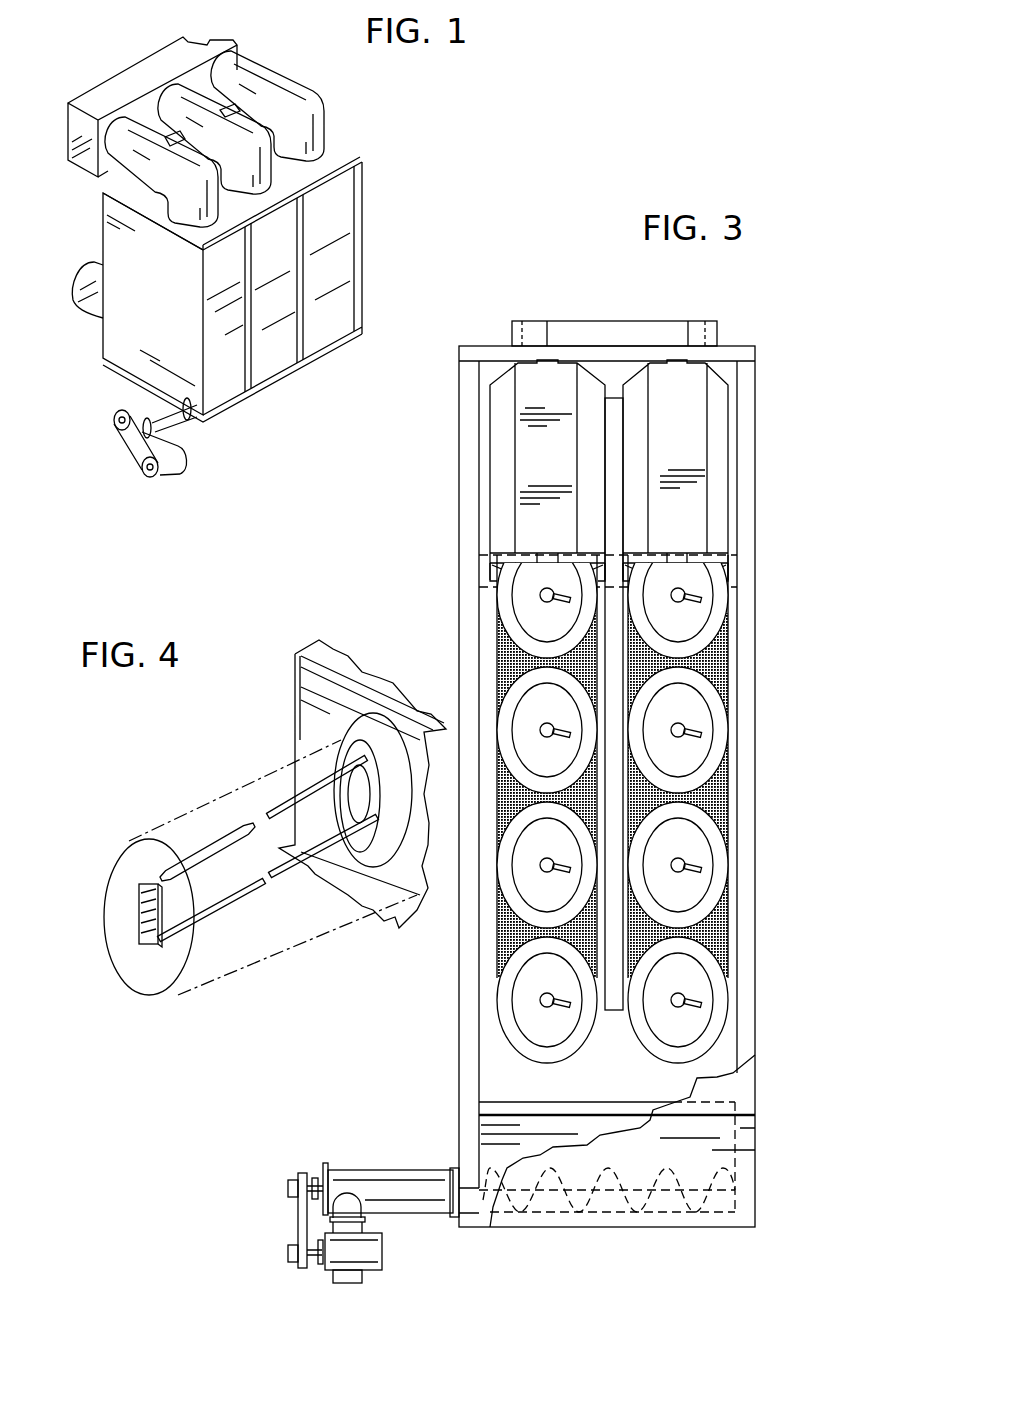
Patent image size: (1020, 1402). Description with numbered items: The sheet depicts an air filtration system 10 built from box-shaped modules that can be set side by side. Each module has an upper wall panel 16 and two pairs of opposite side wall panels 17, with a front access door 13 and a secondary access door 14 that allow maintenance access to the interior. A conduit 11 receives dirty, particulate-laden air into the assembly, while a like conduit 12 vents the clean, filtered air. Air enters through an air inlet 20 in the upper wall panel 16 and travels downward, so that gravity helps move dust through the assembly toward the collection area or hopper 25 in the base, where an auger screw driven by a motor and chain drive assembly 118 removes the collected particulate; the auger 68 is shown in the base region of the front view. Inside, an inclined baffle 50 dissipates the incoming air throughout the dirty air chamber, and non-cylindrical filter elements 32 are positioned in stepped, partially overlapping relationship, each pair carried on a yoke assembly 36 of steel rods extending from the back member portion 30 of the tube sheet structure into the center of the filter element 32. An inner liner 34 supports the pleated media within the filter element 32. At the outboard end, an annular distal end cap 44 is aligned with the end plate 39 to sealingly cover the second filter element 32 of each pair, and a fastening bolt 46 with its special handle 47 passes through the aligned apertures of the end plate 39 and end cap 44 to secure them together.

In FIG. 1, the air filtration system 10 is at (230, 289).
In FIG. 3, the air filtration system 10 is at (503, 781).
In FIG. 1, the conduit 11 is at (266, 98).
In FIG. 1, the conduit 12 is at (90, 279).
In FIG. 1, the front access door 13 is at (227, 389).
In FIG. 1, the secondary access door 14 is at (358, 249).
In FIG. 1, the upper wall panel 16 is at (332, 155).
In FIG. 1, the side wall panels 17 is at (109, 332).
In FIG. 3, the side wall panels 17 is at (472, 608).
In FIG. 3, the air inlet 20 is at (645, 318).
In FIG. 3, the collection area or hopper 25 is at (495, 1060).
In FIG. 4, the back member portion 30 is at (310, 680).
In FIG. 4, the filter element 32 is at (246, 953).
In FIG. 4, the inner liner 34 is at (360, 798).
In FIG. 4, the yoke assembly 36 is at (221, 801).
In FIG. 4, the end plate 39 is at (136, 923).
In FIG. 3, the annular distal end cap 44 is at (717, 733).
In FIG. 3, the fastening bolt 46 is at (685, 598).
In FIG. 3, the special handle 47 is at (688, 997).
In FIG. 3, the inclined baffle 50 is at (700, 457).
In FIG. 3, the auger spring 68 is at (603, 1180).
In FIG. 1, the motor and chain drive assembly 118 is at (155, 476).
In FIG. 3, the motor and chain drive assembly 118 is at (285, 1203).